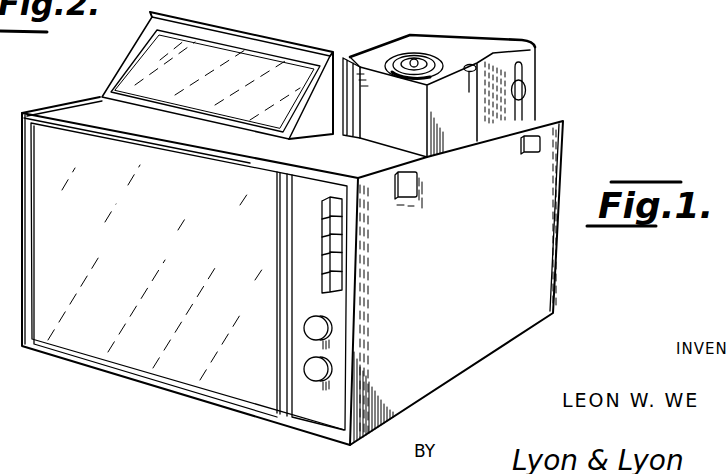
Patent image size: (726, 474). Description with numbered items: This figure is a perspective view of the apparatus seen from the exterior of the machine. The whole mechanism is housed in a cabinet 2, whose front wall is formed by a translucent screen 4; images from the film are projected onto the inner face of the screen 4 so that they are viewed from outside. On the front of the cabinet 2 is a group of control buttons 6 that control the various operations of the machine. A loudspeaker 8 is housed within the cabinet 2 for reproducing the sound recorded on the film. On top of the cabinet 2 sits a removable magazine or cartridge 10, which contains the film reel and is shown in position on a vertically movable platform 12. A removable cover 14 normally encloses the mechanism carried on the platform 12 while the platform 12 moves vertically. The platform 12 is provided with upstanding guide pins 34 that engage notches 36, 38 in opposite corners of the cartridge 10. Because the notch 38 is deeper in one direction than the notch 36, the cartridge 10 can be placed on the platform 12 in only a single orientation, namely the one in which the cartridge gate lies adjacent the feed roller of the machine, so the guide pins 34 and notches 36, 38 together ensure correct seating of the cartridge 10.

The cabinet 2 is at (566, 153).
The translucent screen 4 is at (132, 360).
The group of control buttons 6 is at (339, 266).
The loudspeaker 8 is at (137, 77).
The removable magazine or cartridge 10 is at (456, 63).
The vertically movable platform 12 is at (533, 121).
The removable cover 14 is at (410, 35).
The guide pins 34 is at (344, 56).
The notch 36 is at (353, 96).
The notch 38 is at (473, 58).